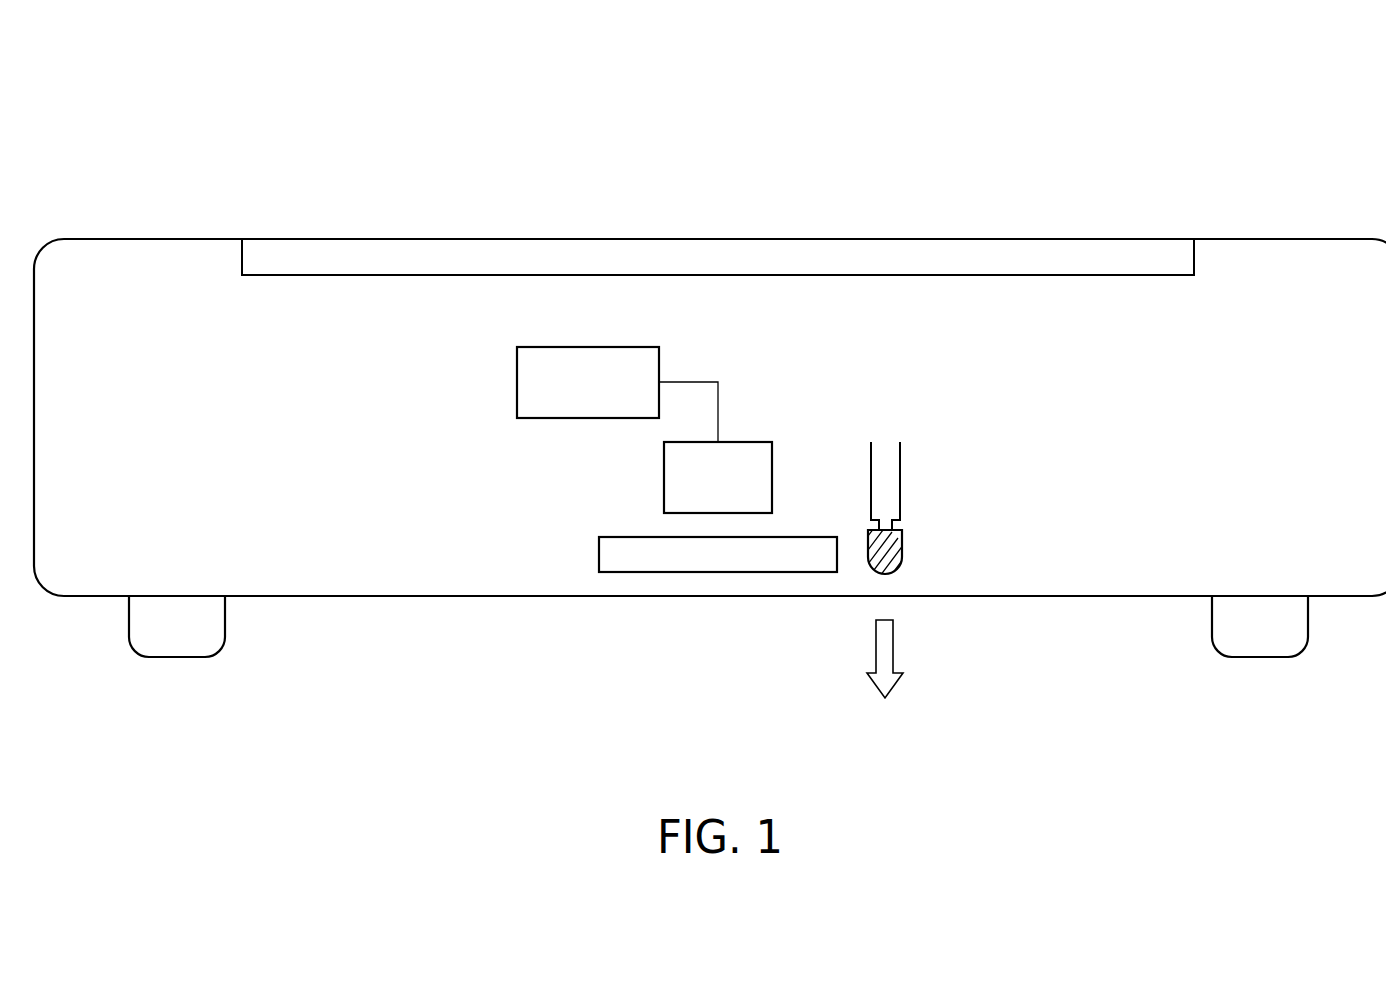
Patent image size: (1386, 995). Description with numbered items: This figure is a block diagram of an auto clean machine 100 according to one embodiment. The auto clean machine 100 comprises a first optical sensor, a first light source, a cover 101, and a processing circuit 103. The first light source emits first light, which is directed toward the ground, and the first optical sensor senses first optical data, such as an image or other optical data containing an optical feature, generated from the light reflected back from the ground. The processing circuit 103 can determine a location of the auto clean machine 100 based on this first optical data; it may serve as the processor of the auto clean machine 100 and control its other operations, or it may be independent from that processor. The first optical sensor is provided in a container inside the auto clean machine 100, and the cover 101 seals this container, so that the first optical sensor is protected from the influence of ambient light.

The auto clean machine 100 is at (1208, 124).
The cover 101 is at (599, 552).
The processing circuit 103 is at (517, 378).